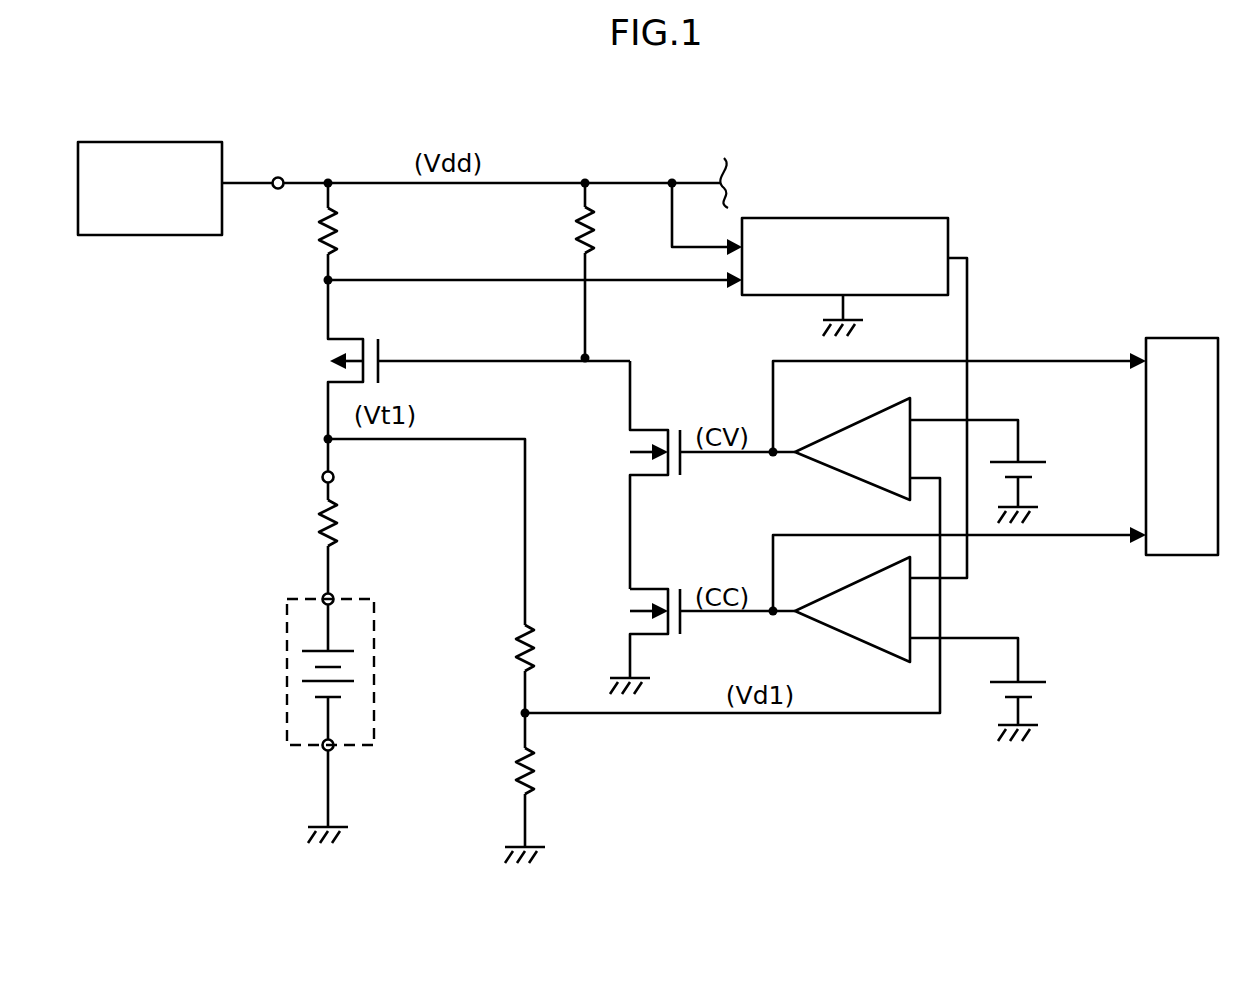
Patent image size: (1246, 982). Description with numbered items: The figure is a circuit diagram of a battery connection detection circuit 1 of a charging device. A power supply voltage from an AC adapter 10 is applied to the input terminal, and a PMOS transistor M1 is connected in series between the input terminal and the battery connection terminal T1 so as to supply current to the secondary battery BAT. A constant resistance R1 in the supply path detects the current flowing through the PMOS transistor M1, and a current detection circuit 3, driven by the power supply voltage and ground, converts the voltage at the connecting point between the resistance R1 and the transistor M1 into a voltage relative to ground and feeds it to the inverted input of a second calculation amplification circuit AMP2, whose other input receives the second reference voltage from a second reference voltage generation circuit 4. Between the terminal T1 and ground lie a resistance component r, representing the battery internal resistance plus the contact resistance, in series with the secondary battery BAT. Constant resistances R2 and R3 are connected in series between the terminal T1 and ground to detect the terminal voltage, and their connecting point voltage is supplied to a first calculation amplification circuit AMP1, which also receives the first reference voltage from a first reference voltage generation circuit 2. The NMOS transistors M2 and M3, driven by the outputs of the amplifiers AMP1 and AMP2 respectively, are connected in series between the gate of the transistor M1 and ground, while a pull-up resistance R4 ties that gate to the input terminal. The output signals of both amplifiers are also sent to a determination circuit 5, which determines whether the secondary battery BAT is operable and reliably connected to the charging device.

The battery connection detection circuit 1 is at (1022, 200).
The first reference voltage generation circuit 2 is at (1047, 469).
The current detection circuit 3 is at (882, 218).
The second reference voltage generation circuit 4 is at (1047, 689).
The determination circuit 5 is at (1184, 337).
The AC adapter 10 is at (188, 142).
The constant resistance R1 is at (310, 231).
The constant resistance R2 is at (503, 669).
The constant resistance R3 is at (508, 788).
The resistance R4 is at (563, 270).
The PMOS transistor M1 is at (479, 359).
The NMOS transistor M2 is at (712, 475).
The NMOS transistor M3 is at (702, 627).
The battery connection terminal T1 is at (320, 474).
The resistance component r is at (339, 546).
The secondary battery BAT is at (376, 655).
The first calculation amplification circuit AMP1 is at (852, 449).
The second calculation amplification circuit AMP2 is at (852, 609).